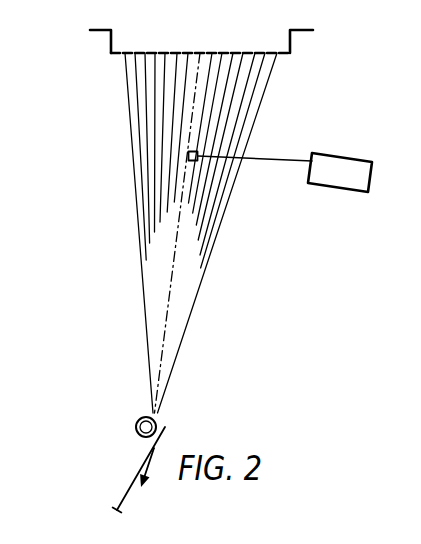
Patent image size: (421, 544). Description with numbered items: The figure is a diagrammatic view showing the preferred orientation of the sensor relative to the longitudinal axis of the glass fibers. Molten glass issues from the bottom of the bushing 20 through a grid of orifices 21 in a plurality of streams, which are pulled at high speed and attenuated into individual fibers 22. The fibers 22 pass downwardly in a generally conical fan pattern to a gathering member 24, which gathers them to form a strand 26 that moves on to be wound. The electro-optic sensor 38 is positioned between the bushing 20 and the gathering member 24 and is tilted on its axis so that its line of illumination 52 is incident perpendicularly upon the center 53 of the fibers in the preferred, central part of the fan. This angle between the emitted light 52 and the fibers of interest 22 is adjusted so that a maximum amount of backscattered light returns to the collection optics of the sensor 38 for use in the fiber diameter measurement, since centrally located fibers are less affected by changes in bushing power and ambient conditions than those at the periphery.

The bushing 20 is at (104, 56).
The orifices 21 is at (152, 56).
The fibers 22 is at (200, 177).
The gathering member 24 is at (142, 420).
The strand 26 is at (137, 468).
The electro-optic sensor 38 is at (347, 163).
The line of illumination 52 is at (250, 160).
The center of the fibers 53 is at (188, 156).